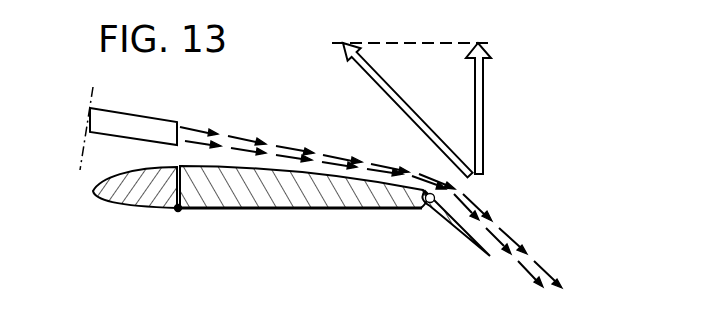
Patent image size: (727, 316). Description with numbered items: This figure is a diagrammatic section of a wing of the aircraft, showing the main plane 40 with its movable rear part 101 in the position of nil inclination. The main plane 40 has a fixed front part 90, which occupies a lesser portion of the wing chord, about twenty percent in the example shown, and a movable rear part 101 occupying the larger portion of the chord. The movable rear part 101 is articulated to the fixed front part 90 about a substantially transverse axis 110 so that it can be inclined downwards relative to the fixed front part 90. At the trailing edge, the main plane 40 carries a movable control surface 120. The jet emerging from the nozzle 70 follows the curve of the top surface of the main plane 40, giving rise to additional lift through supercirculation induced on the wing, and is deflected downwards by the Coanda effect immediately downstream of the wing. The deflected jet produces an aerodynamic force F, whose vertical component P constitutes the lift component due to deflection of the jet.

The nozzle 70 is at (142, 127).
The fixed front part 90 is at (142, 190).
The movable rear part 101 is at (363, 192).
The transverse axis 110 is at (182, 213).
The main plane 40 is at (291, 229).
The movable control surface 120 is at (457, 226).
The aerodynamic force F is at (386, 92).
The vertical component P is at (481, 103).